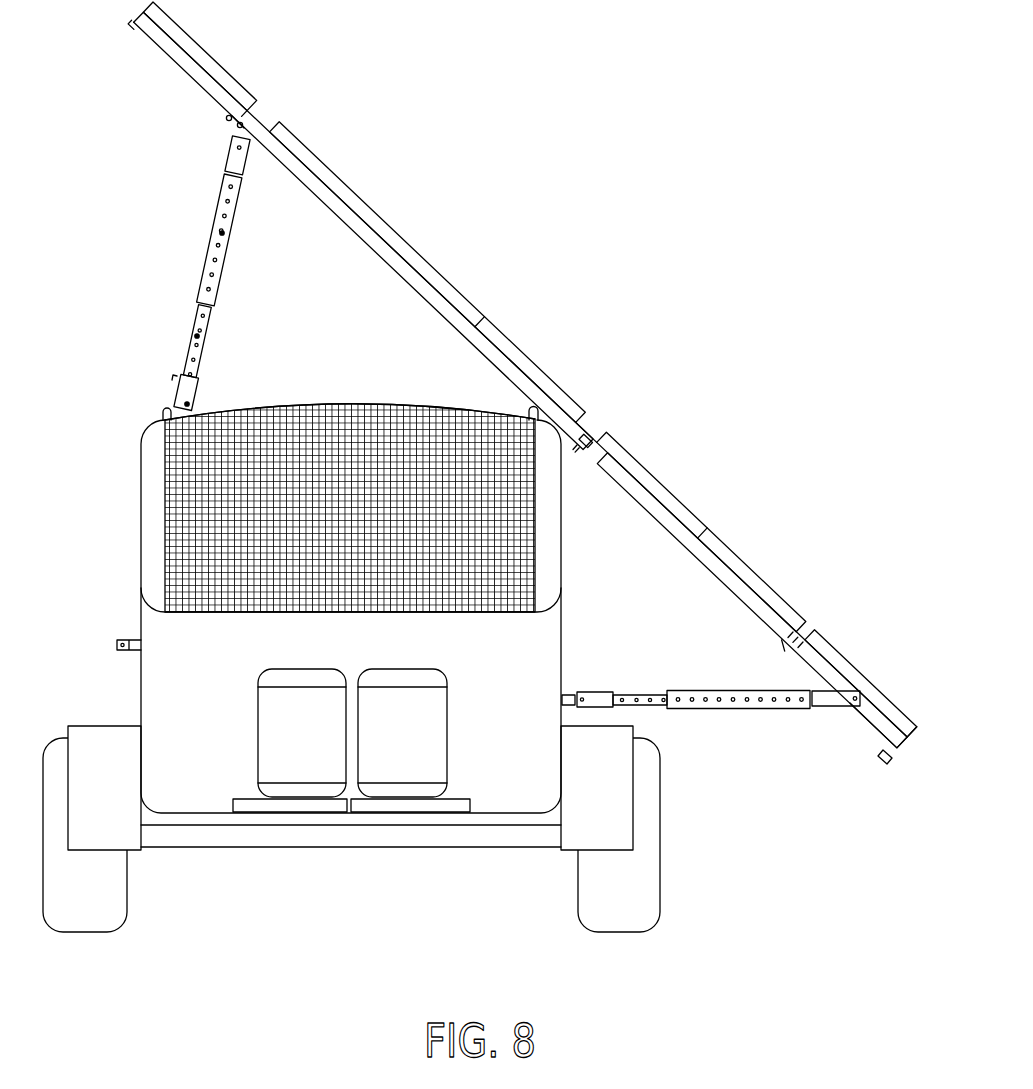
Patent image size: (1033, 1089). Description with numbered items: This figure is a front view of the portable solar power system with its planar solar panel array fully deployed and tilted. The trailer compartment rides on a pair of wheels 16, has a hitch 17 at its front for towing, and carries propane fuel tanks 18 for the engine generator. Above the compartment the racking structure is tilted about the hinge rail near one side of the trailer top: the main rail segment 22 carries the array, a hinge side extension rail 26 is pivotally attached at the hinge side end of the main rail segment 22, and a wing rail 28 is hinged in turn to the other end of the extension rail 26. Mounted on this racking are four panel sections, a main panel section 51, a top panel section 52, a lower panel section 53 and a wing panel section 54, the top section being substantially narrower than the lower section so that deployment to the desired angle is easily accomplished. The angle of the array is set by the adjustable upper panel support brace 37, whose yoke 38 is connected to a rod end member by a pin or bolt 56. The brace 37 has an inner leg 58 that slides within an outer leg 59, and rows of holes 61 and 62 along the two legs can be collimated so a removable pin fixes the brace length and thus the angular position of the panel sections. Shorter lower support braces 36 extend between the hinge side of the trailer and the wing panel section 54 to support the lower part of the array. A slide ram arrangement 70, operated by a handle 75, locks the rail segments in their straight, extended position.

The wheels 16 is at (113, 887).
The hitch 17 is at (320, 806).
The tanks 18 is at (403, 770).
The main rail segment 22 is at (493, 350).
The hinge side extension rail 26 is at (706, 561).
The wing rail 28 is at (873, 718).
The lower support braces 36 is at (724, 705).
The adjustable panel support brace 37 is at (207, 252).
The yoke 38 is at (172, 400).
The main panel section 51 is at (417, 258).
The top panel section 52 is at (205, 62).
The lower panel section 53 is at (693, 517).
The wing panel section 54 is at (851, 671).
The pin or bolt 56 is at (188, 404).
The inner leg 58 is at (201, 356).
The outer leg 59 is at (230, 215).
The holes 61 is at (196, 336).
The holes 62 is at (223, 235).
The slide ram arrangement 70 is at (240, 127).
The handle 75 is at (228, 118).